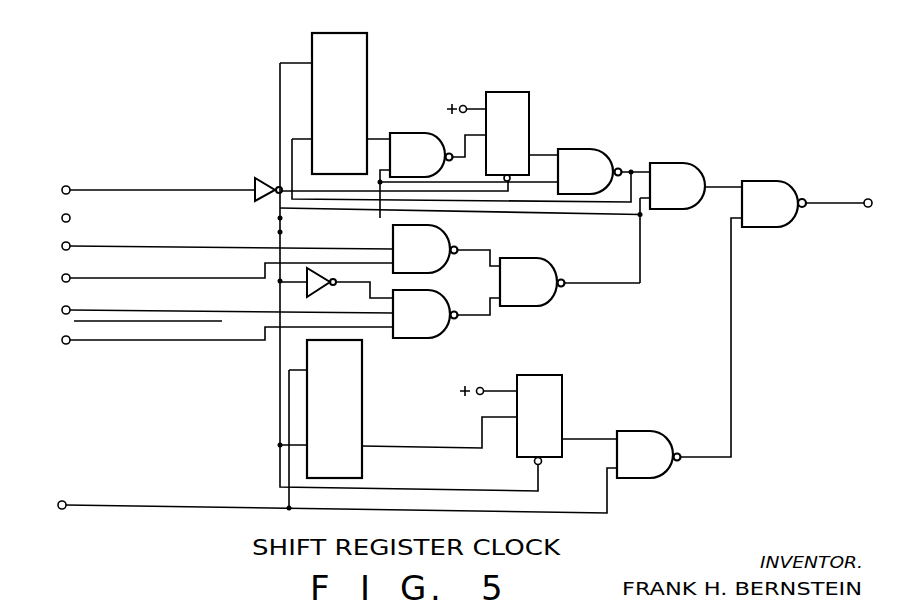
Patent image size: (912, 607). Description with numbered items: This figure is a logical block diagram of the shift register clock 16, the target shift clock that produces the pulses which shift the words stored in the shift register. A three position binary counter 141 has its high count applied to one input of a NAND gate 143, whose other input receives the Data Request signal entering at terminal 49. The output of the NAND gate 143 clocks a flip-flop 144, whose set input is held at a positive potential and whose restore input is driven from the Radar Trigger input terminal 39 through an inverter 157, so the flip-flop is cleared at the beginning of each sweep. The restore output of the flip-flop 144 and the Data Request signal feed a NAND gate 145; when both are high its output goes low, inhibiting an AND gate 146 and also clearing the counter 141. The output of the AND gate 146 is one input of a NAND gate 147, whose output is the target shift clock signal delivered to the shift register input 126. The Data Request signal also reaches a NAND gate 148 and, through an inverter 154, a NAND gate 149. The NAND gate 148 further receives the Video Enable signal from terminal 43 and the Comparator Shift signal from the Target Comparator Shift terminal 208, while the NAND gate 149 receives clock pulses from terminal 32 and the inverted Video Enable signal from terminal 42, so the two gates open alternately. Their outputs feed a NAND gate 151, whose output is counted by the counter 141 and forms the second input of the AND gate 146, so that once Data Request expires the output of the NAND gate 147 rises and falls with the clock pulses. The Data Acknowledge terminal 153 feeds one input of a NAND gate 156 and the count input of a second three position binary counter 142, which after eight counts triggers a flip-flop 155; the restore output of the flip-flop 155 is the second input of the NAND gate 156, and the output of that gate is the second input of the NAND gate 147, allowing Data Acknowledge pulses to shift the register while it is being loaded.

The shift register clock 16 is at (465, 296).
The Radar Trigger input terminal 39 is at (63, 190).
The data request input 49 is at (63, 218).
The Video Enable input terminal 43 is at (63, 246).
The Target Comparator Shift terminal 208 is at (63, 278).
The clock terminal 32 is at (63, 310).
The Video Enable bar terminal 42 is at (63, 340).
The Data Acknowledge terminal 153 is at (58, 505).
The shift register input 126 is at (875, 191).
The inverter 157 is at (262, 177).
The inverter 154 is at (314, 284).
The three position binary counter 141 is at (357, 80).
The three position binary counter 142 is at (348, 395).
The flip-flop 144 is at (492, 98).
The flip-flop 155 is at (545, 415).
The NAND gate 143 is at (428, 146).
The NAND gate 145 is at (565, 152).
The AND gate 146 is at (655, 168).
The NAND gate 147 is at (749, 188).
The NAND gate 148 is at (433, 240).
The NAND gate 149 is at (433, 305).
The NAND gate 151 is at (508, 265).
The NAND gate 156 is at (628, 443).